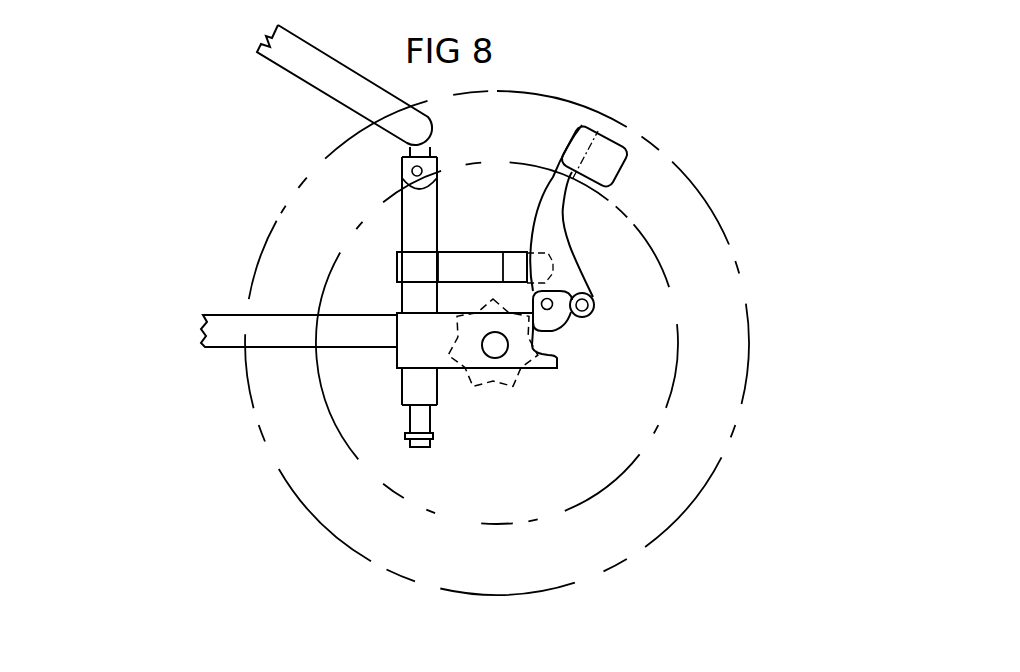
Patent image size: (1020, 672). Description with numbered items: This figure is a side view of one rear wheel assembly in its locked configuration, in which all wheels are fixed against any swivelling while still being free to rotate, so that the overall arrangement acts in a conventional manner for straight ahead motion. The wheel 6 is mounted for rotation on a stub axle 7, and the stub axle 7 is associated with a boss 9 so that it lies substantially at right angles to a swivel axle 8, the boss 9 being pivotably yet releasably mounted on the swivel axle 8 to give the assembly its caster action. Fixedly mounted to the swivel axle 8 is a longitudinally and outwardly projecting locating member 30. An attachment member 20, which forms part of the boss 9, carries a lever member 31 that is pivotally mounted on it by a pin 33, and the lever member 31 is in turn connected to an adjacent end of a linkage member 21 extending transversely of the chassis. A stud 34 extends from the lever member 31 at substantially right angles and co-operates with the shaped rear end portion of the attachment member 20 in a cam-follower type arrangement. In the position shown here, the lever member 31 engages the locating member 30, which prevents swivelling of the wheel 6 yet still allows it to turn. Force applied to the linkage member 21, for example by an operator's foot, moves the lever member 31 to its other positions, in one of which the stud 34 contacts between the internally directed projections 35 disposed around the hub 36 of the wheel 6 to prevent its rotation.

The wheel 6 is at (295, 475).
The stub axle 7 is at (501, 352).
The swivel axle 8 is at (417, 302).
The boss 9 is at (403, 355).
The attachment member 20 is at (540, 322).
The linkage member 21 is at (613, 168).
The locating member 30 is at (482, 267).
The lever member 31 is at (553, 232).
The pin 33 is at (580, 322).
The stud 34 is at (552, 303).
The internally directed projections 35 is at (480, 383).
The hub 36 is at (493, 380).